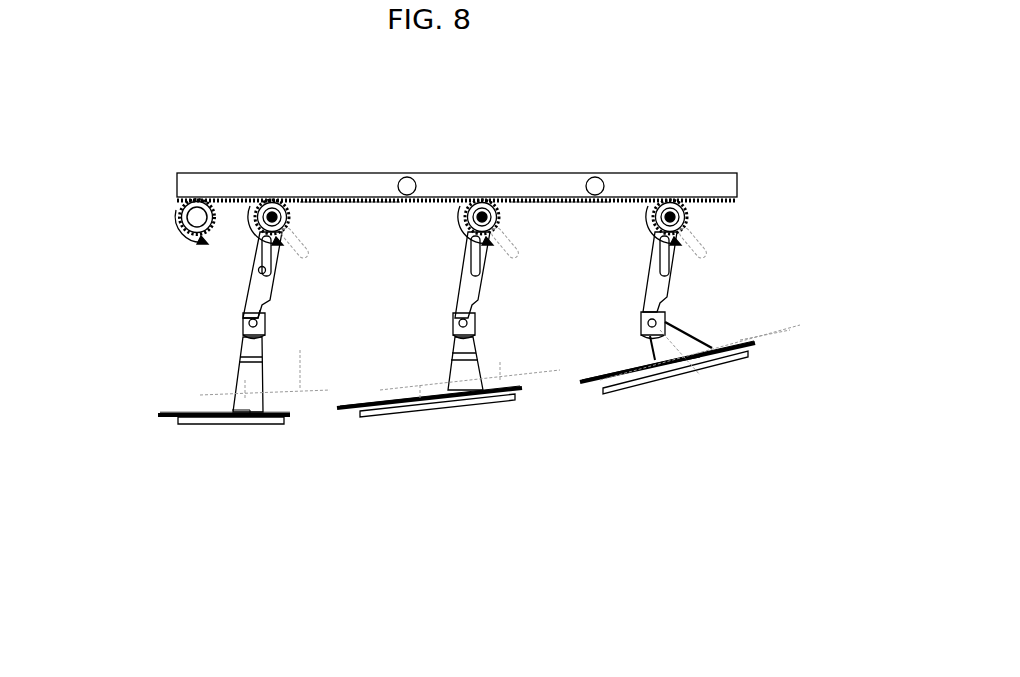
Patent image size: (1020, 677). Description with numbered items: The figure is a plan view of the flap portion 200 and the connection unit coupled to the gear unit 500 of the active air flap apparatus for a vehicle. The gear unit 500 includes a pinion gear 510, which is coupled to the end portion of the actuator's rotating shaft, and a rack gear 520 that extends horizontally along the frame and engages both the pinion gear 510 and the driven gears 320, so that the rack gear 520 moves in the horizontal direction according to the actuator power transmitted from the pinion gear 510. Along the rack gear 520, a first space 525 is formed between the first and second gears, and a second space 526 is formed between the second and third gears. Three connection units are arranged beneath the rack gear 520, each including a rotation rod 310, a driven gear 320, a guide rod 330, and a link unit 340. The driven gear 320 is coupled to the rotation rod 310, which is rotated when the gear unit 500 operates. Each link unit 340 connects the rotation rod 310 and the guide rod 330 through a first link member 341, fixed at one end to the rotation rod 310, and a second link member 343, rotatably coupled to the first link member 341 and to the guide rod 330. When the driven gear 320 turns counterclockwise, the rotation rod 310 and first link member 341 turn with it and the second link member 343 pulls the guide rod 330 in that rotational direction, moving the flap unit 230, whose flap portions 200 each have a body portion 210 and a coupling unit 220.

The gear unit 500 is at (457, 163).
The pinion gear 510 is at (180, 208).
The rack gear 520 is at (238, 173).
The first space 525 is at (560, 203).
The second space 526 is at (350, 203).
The driven gear 320 is at (292, 215).
The rotation rod 310 is at (268, 272).
The guide rod 330 is at (257, 324).
The link unit 340 is at (150, 262).
The first link member 341 is at (258, 240).
The second link member 343 is at (240, 300).
The flap portion 200 is at (262, 486).
The body portion 210 is at (200, 424).
The coupling unit 220 is at (250, 412).
The flap unit 230 is at (753, 490).